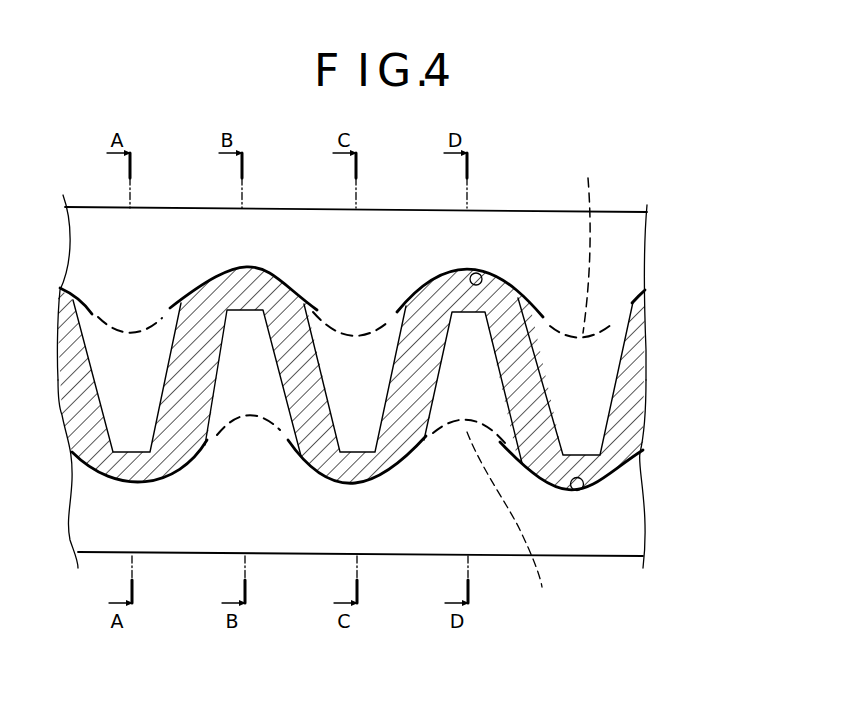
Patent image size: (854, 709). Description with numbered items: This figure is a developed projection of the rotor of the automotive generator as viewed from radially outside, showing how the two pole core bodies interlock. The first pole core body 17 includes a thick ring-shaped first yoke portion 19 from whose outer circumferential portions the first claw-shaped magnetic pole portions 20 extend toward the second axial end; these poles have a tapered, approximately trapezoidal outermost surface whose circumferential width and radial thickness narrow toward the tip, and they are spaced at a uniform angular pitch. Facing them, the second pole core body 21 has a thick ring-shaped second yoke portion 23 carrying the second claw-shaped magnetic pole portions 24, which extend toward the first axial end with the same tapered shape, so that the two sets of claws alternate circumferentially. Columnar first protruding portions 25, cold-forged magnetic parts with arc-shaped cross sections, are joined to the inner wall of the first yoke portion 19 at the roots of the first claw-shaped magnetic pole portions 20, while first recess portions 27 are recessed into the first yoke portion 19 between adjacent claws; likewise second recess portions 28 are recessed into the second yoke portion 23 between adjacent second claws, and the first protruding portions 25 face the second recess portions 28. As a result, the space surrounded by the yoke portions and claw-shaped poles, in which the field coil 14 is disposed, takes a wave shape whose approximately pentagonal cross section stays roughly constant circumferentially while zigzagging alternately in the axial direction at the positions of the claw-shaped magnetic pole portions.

The field coil 14 is at (637, 397).
The first pole core body 17 is at (639, 202).
The first yoke portion 19 is at (633, 247).
The first claw-shaped magnetic pole portions 20 is at (600, 348).
The second pole core body 21 is at (652, 563).
The second yoke portion 23 is at (620, 523).
The second claw-shaped magnetic pole portions 24 is at (492, 400).
The first protruding portions 25 is at (596, 240).
The first recess portions 27 is at (480, 284).
The second recess portions 28 is at (577, 491).